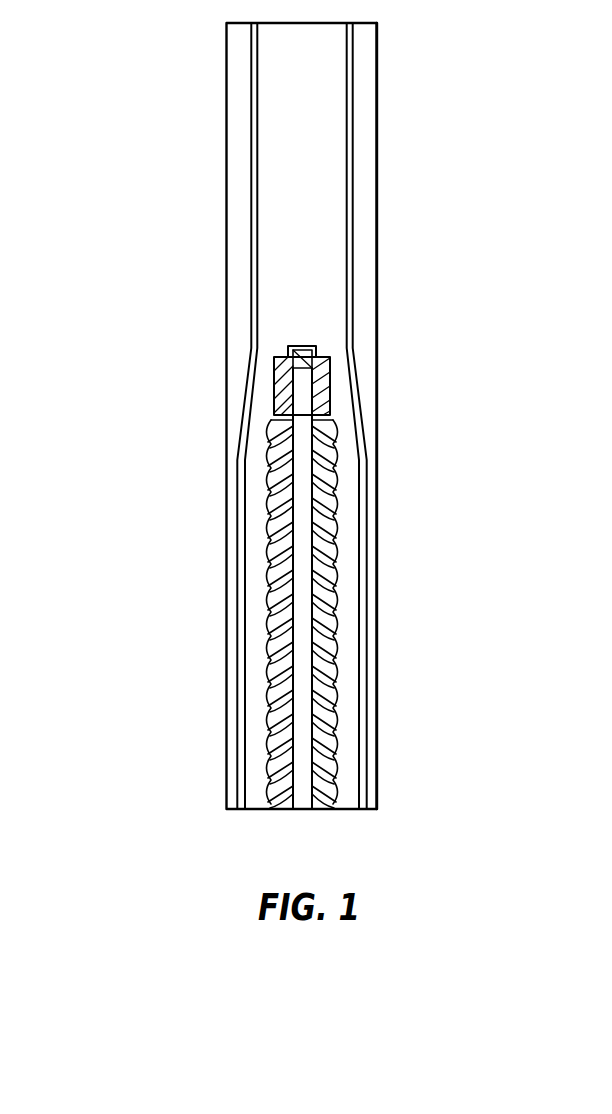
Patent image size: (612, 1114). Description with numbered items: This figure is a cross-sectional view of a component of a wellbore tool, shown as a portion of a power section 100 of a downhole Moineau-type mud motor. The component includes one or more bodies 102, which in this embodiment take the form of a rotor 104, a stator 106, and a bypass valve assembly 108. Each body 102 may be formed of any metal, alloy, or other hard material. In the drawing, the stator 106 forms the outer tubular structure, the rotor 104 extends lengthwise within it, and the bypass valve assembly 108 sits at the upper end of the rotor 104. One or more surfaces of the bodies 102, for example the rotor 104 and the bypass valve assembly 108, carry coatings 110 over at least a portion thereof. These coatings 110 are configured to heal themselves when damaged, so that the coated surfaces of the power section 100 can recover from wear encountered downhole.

The power section 100 is at (127, 340).
The body 102 is at (237, 377).
The rotor 104 is at (301, 450).
The stator 106 is at (370, 497).
The bypass valve assembly 108 is at (318, 388).
The coating 110 is at (350, 303).